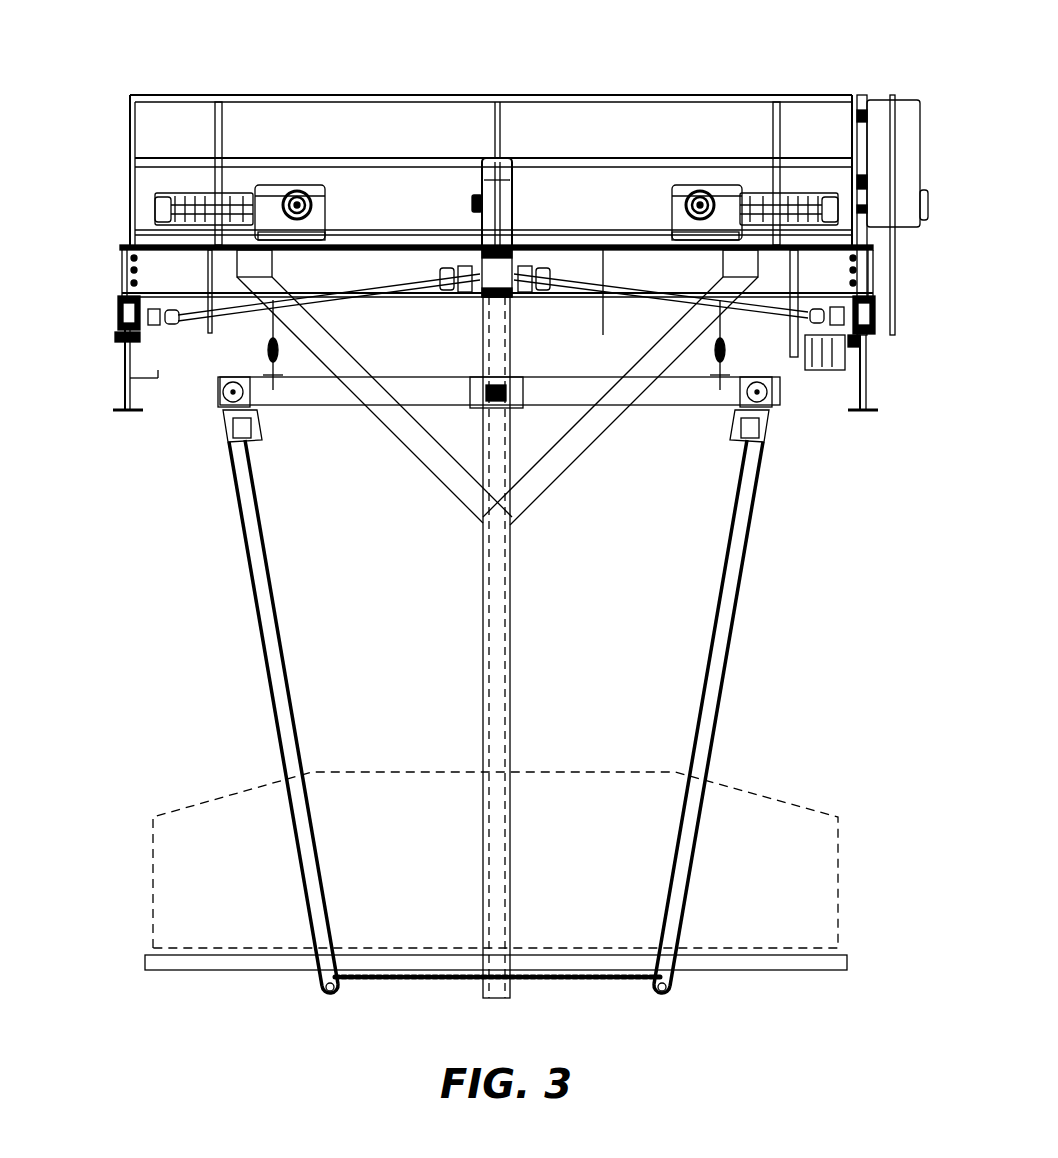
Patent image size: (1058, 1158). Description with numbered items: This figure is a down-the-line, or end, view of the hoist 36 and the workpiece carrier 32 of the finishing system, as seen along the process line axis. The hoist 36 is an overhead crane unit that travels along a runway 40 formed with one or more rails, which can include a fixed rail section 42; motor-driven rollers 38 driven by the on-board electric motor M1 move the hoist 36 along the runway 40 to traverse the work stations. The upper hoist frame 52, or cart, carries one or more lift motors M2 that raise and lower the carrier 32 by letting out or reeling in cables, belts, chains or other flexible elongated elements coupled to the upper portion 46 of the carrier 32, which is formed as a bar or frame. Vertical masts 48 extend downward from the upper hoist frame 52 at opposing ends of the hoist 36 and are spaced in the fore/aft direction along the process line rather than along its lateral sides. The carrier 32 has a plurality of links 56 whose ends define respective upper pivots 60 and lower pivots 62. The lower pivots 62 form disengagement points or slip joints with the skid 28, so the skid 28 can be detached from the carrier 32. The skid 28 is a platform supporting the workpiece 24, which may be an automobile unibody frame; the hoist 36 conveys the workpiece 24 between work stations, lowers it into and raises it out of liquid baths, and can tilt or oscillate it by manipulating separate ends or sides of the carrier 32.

The workpiece 24 is at (840, 838).
The skid 28 is at (778, 963).
The workpiece carrier 32 is at (232, 350).
The hoist 36 is at (648, 78).
The motor-driven rollers 38 is at (120, 307).
The runway 40 is at (93, 344).
The fixed rail section 42 is at (128, 366).
The upper portion of the carrier 46 is at (680, 398).
The vertical mast 48 is at (497, 712).
The upper hoist frame 52 is at (815, 270).
The links 56 is at (288, 742).
The upper pivot 60 is at (231, 399).
The lower pivot 62 is at (332, 993).
The electric motor M1 is at (512, 188).
The lift motor M2 is at (235, 203).